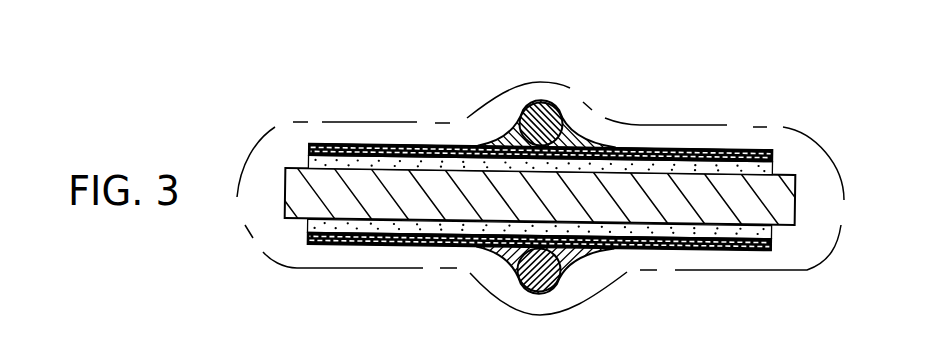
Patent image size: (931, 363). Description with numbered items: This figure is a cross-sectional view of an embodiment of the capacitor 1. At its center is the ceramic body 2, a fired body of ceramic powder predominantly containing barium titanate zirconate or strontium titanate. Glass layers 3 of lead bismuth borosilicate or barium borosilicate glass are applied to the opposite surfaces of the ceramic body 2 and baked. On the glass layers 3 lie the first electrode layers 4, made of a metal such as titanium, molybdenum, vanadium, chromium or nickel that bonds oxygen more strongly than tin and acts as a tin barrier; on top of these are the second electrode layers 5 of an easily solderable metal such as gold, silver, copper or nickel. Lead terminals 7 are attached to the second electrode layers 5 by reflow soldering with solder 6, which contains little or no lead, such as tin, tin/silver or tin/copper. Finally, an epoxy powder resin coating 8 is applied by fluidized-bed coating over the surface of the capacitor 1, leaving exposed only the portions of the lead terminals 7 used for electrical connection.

The capacitor 1 is at (350, 110).
The ceramic body 2 is at (797, 202).
The glass layers 3 is at (773, 166).
The first electrode layers 4 is at (772, 157).
The second electrode layers 5 is at (728, 148).
The solder 6 is at (582, 123).
The lead terminals 7 is at (538, 109).
The coating 8 is at (398, 123).